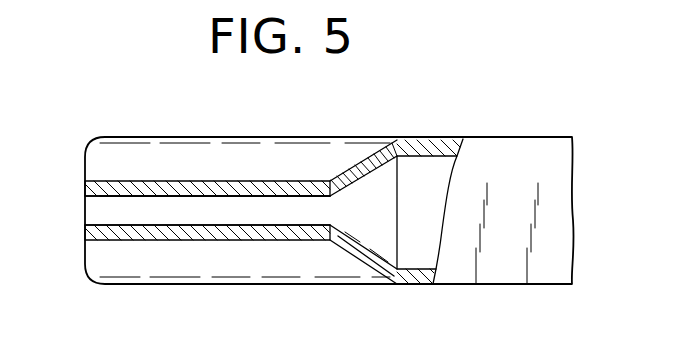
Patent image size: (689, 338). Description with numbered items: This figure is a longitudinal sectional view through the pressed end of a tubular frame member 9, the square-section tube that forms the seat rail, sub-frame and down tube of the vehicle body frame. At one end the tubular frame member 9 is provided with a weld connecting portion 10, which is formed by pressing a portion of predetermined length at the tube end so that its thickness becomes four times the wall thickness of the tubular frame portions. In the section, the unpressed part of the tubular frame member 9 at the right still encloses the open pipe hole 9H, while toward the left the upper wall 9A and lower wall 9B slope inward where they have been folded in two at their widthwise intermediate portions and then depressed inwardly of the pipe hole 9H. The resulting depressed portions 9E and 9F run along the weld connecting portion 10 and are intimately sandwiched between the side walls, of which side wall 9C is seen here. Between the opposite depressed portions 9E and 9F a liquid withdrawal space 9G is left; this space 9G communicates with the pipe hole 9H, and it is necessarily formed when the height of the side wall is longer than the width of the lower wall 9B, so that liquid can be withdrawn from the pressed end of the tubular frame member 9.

The weld connecting portion 10 is at (171, 131).
The tubular frame member 9 is at (511, 148).
The upper wall 9A is at (348, 176).
The lower wall 9B is at (345, 249).
The side wall 9C is at (92, 205).
The depressed portion 9E is at (107, 180).
The depressed portion 9F is at (178, 241).
The liquid withdrawal space 9G is at (215, 196).
The pipe hole 9H is at (424, 160).